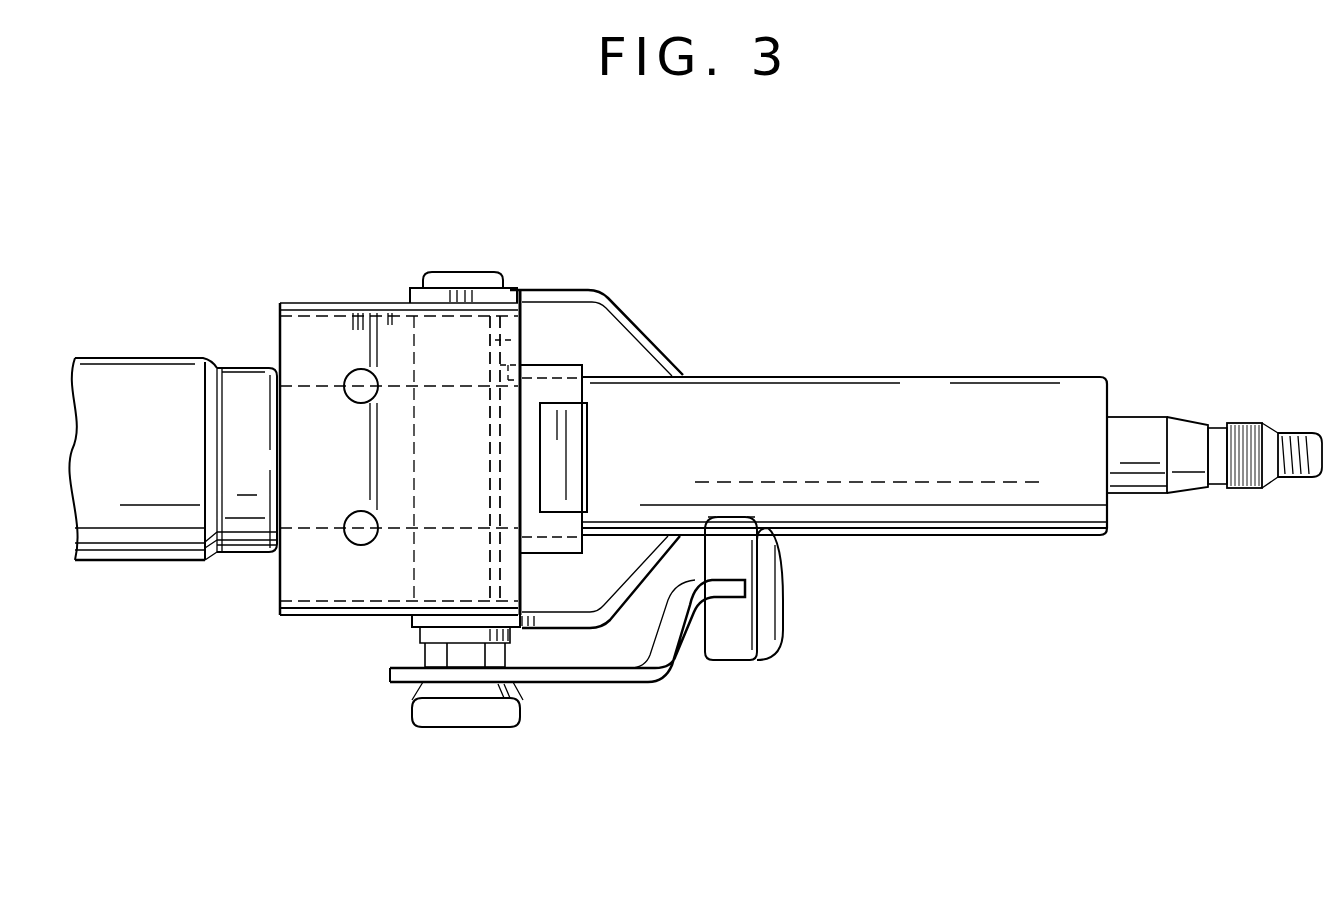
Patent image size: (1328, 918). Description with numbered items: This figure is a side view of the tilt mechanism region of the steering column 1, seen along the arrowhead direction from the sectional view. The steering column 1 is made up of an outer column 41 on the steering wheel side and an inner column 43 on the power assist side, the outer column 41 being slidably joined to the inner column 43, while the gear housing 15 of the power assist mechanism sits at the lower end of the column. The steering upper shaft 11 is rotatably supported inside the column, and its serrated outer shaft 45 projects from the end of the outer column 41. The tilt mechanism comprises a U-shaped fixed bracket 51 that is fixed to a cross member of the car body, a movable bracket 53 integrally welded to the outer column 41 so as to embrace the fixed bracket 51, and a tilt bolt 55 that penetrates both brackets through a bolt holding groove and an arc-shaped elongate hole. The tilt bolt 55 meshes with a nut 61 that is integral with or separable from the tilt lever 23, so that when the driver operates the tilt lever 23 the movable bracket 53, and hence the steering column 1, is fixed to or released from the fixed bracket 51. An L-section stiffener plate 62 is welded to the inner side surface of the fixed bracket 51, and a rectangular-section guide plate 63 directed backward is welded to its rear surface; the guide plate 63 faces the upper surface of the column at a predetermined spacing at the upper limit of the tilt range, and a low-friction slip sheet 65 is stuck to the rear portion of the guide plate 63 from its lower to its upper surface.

The steering column 1 is at (922, 310).
The steering upper shaft 11 is at (1197, 410).
The gear housing 15 is at (140, 542).
The tilt lever 23 is at (647, 673).
The outer column 41 is at (997, 385).
The inner column 43 is at (312, 390).
The outer shaft 45 is at (1132, 480).
The fixed bracket 51 is at (348, 328).
The movable bracket 53 is at (595, 292).
The tilt bolt 55 is at (458, 280).
The nut 61 is at (432, 653).
The stiffener plate 62 is at (522, 337).
The guide plate 63 is at (570, 363).
The slip sheet 65 is at (575, 438).